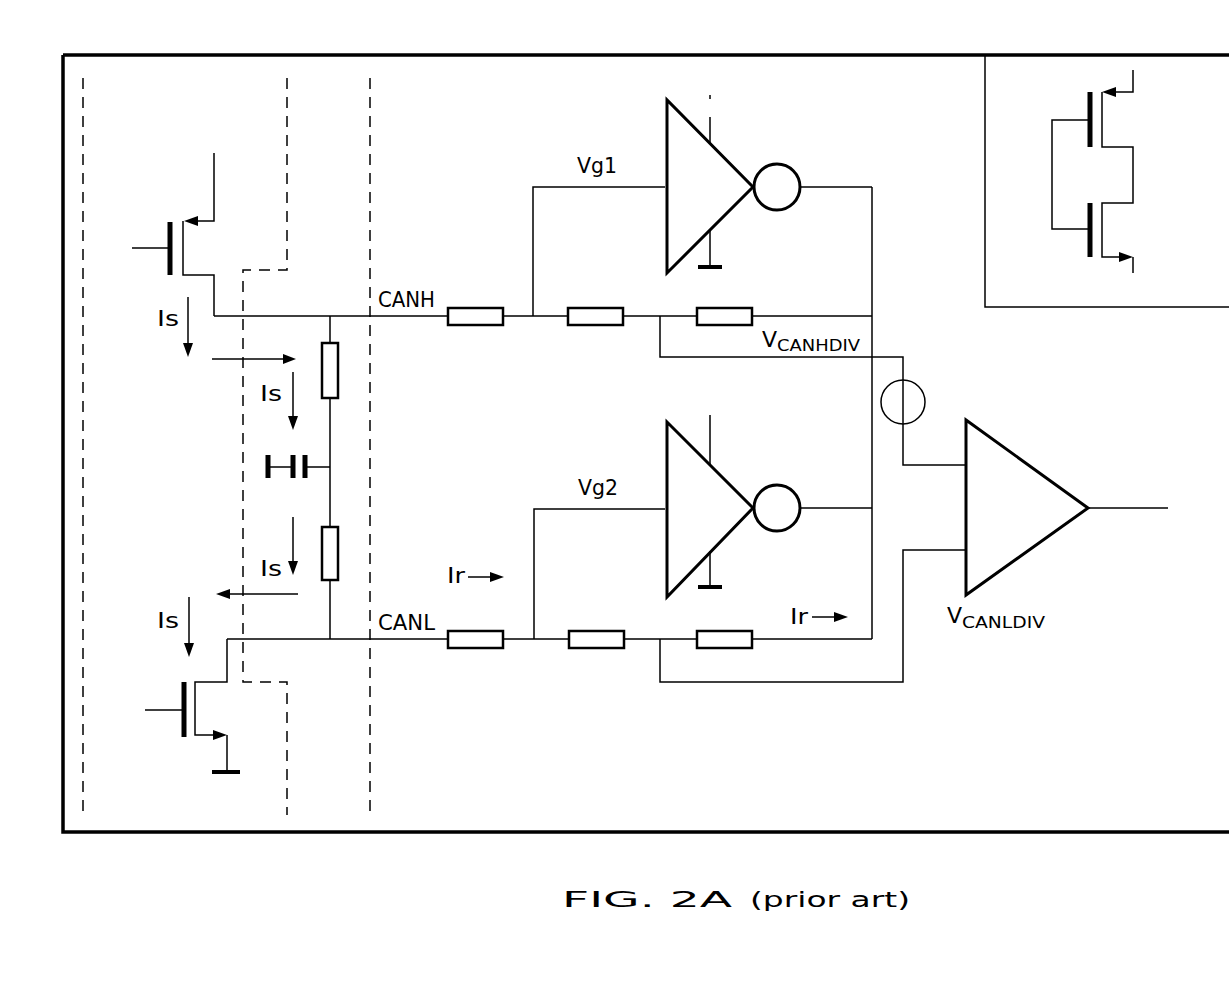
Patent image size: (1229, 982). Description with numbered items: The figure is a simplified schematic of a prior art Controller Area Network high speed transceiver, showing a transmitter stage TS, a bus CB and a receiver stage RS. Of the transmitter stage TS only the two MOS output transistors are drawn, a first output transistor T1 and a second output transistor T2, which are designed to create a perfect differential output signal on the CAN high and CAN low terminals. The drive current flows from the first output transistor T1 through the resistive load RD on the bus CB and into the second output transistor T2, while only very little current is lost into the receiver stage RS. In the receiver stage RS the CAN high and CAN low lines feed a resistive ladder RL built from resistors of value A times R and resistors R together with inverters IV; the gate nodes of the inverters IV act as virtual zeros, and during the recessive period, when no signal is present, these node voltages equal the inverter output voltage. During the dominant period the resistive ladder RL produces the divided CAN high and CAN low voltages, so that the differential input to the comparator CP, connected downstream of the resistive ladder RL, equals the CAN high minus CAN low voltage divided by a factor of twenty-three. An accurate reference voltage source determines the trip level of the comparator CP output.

The first output transistor T1 is at (188, 205).
The second output transistor T2 is at (178, 763).
The transmitter stage TS is at (178, 815).
The bus CB is at (343, 815).
The receiver stage RS is at (474, 815).
The resistive load RD is at (366, 478).
The resistor R is at (606, 300).
The inverter IV is at (715, 197).
The resistive ladder RL is at (677, 752).
The comparator CP is at (1085, 728).